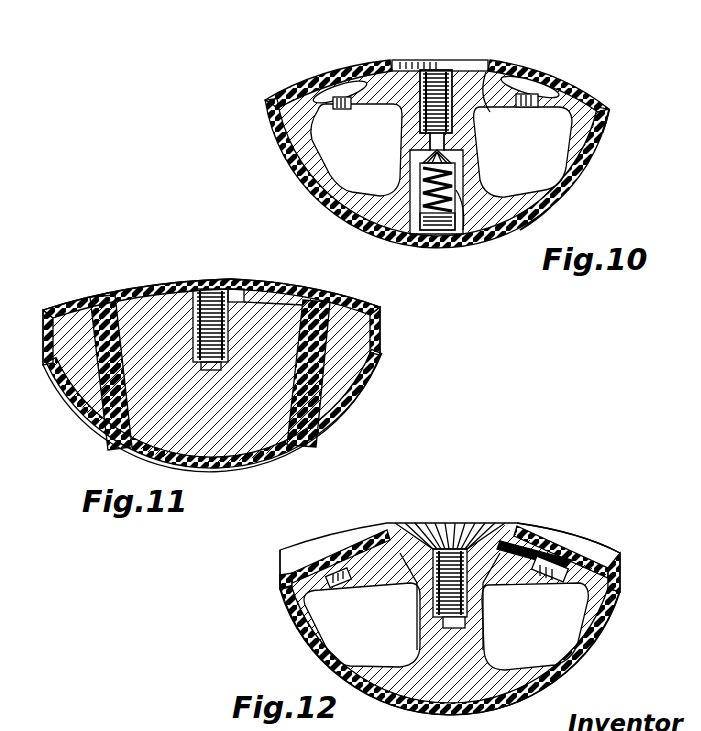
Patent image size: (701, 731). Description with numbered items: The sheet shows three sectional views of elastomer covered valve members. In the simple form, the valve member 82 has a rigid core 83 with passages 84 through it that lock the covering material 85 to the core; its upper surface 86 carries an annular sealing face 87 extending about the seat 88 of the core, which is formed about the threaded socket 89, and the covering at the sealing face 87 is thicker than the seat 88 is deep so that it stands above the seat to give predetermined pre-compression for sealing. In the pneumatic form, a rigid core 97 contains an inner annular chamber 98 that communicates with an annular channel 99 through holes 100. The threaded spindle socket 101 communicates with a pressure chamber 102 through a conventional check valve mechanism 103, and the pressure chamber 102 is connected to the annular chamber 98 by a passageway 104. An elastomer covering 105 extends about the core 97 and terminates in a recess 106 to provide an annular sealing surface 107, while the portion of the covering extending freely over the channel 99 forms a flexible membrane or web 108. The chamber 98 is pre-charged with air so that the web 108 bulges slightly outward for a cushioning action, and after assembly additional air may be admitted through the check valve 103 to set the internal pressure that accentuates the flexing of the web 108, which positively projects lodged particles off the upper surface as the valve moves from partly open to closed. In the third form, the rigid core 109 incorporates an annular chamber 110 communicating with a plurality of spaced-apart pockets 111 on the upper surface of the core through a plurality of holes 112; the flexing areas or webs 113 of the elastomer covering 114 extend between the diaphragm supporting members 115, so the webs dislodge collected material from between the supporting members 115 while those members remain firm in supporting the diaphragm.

In FIG. 11, the club head body 82 is at (384, 350).
In FIG. 11, the rigid core 83 is at (303, 310).
In FIG. 11, the passages 84 is at (317, 383).
In FIG. 11, the covering material 85 is at (227, 467).
In FIG. 11, the upper surface 86 is at (93, 297).
In FIG. 11, the annular sealing face 87 is at (253, 283).
In FIG. 11, the seat 88 is at (233, 286).
In FIG. 11, the threaded socket 89 is at (217, 288).
In FIG. 10, the rigid core 97 is at (603, 98).
In FIG. 10, the inner annular chamber 98 is at (562, 143).
In FIG. 10, the annular channel 99 is at (312, 82).
In FIG. 10, the holes 100 is at (347, 108).
In FIG. 10, the threaded spindle socket 101 is at (443, 68).
In FIG. 10, the pressure chamber 102 is at (483, 235).
In FIG. 10, the check valve mechanism 103 is at (430, 155).
In FIG. 10, the passageway 104 is at (420, 181).
In FIG. 10, the elastomer covering 105 is at (543, 210).
In FIG. 10, the recess 106 is at (488, 74).
In FIG. 10, the annular sealing surface 107 is at (489, 66).
In FIG. 10, the flexible membrane or web 108 is at (333, 76).
In FIG. 12, the rigid core 109 is at (313, 625).
In FIG. 12, the annular chamber 110 is at (360, 637).
In FIG. 12, the pockets 111 is at (350, 563).
In FIG. 12, the holes 112 is at (352, 577).
In FIG. 12, the flexing areas 113 is at (560, 557).
In FIG. 12, the elastomer covering 114 is at (523, 690).
In FIG. 12, the diaphragm supporting members 115 is at (597, 543).